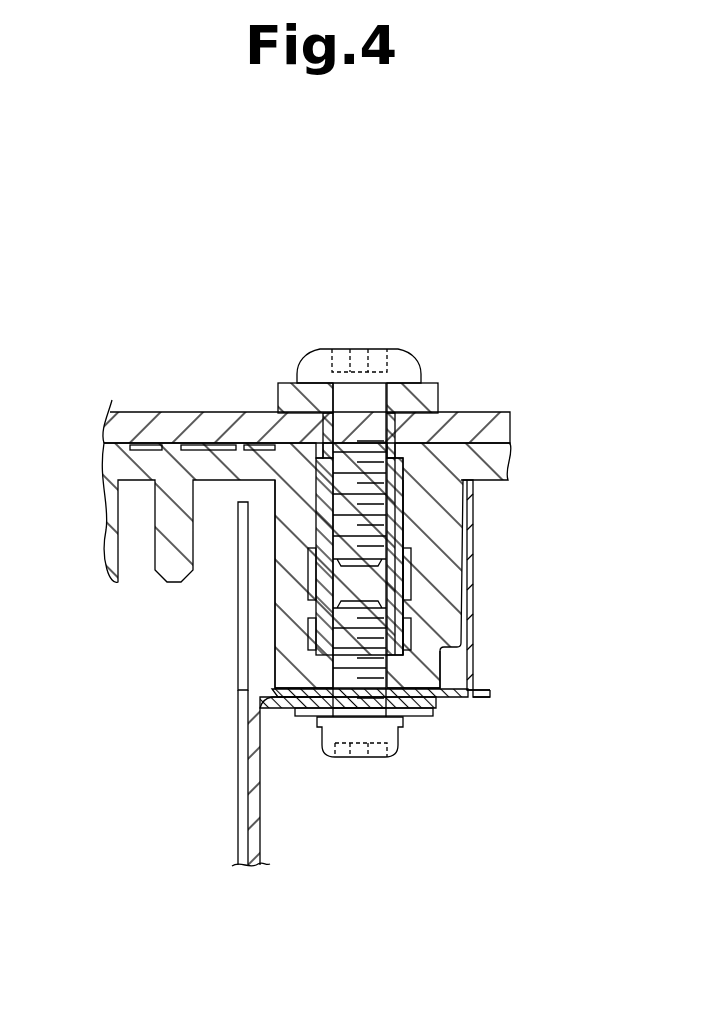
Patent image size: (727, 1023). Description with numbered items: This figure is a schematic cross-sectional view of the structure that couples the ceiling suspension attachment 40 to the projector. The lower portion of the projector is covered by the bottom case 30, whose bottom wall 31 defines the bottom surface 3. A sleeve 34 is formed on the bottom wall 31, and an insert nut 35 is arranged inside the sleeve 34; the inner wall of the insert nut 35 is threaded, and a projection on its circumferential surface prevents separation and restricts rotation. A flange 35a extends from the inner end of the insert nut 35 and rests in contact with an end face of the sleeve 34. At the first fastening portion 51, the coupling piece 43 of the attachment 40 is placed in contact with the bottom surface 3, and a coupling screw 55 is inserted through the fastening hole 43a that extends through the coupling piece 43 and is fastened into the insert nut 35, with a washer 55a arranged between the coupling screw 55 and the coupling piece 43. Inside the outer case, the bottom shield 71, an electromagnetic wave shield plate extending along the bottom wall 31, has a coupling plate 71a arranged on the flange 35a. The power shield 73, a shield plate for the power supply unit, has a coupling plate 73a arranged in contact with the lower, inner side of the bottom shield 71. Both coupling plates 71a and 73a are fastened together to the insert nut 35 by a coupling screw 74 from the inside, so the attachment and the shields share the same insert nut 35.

The bottom surface 3 is at (172, 443).
The bottom case 30 is at (273, 511).
The bottom wall 31 is at (117, 468).
The sleeve 34 is at (453, 594).
The insert nut 35 is at (353, 606).
The flange 35a is at (445, 699).
The attachment 40 is at (307, 396).
The coupling piece 43 is at (200, 412).
The fastening hole 43a is at (393, 420).
The first fastening portion 51 is at (361, 547).
The coupling screw 55 is at (418, 355).
The washer 55a is at (290, 384).
The bottom shield 71 is at (512, 604).
The coupling plate 71a is at (486, 697).
The power shield 73 is at (354, 684).
The coupling plate 73a is at (432, 717).
The coupling screw 74 is at (375, 758).